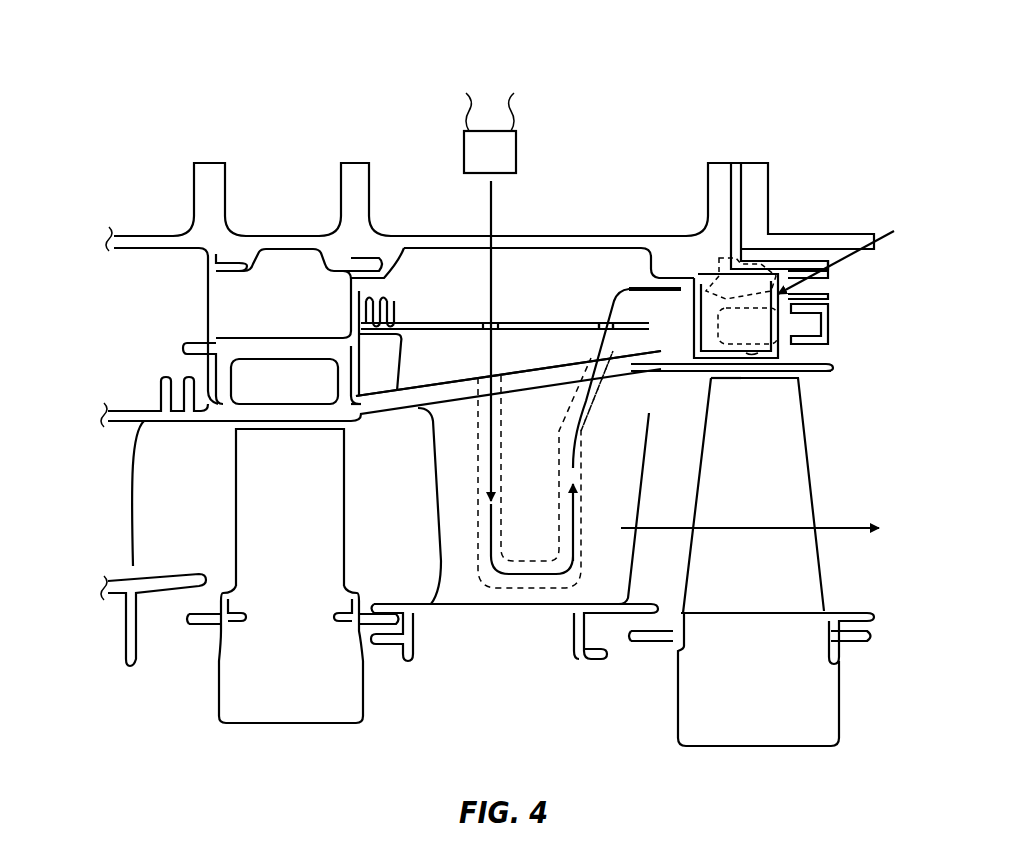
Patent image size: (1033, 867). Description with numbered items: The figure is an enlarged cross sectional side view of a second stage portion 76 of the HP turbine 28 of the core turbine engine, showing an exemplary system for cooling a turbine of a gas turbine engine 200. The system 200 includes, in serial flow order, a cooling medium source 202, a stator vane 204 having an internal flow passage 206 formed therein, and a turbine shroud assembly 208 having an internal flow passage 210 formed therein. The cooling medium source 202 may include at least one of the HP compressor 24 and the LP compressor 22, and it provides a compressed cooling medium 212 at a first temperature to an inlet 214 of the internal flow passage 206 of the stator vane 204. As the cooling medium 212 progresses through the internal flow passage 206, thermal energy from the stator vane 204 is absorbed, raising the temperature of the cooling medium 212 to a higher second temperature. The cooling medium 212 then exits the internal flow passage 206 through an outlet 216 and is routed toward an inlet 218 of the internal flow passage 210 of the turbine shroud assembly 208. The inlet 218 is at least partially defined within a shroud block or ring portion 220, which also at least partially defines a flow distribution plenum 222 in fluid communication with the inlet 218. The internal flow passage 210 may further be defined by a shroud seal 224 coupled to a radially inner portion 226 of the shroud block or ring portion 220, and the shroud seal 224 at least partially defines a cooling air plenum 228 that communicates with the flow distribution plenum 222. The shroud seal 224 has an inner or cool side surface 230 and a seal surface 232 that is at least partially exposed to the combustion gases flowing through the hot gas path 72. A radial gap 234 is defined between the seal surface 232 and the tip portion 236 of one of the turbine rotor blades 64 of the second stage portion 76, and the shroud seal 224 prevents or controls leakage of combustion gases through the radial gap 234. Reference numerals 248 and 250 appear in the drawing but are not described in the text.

The high pressure (HP) turbine 28 is at (583, 60).
The second stage portion 76 is at (610, 112).
The low pressure (LP) compressor 22 is at (463, 99).
The high pressure (HP) compressor 24 is at (511, 99).
The cooling medium source 202 is at (507, 162).
The cooling medium 212 is at (505, 208).
The inlet 218 is at (697, 283).
The internal flow passage 210 is at (727, 260).
The flow distribution plenum 222 is at (747, 282).
The turbine shroud assembly 208 is at (855, 257).
The radially inner portion 226 is at (823, 323).
The cooling air plenum 228 is at (767, 333).
The shroud seal 224 is at (830, 365).
The seal surface 232 is at (827, 368).
The inner or cool side surface 230 is at (757, 352).
The shroud block or ring portion 220 is at (693, 317).
The radial gap 234 is at (713, 372).
The tip portion 236 is at (733, 385).
The outlet 216 is at (617, 370).
The internal flow passage 206 is at (478, 452).
The stator vane 204 is at (460, 572).
The turbine rotor blade 64 is at (775, 507).
The hot gas path 72 is at (843, 532).
The system for cooling a turbine 200 is at (568, 705).
The inlet 214 is at (488, 385).
The seal plate 248 is at (487, 318).
The seal plate retainer 250 is at (598, 318).